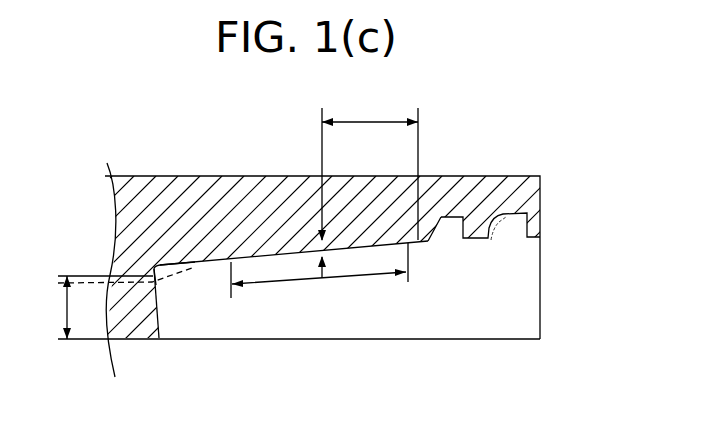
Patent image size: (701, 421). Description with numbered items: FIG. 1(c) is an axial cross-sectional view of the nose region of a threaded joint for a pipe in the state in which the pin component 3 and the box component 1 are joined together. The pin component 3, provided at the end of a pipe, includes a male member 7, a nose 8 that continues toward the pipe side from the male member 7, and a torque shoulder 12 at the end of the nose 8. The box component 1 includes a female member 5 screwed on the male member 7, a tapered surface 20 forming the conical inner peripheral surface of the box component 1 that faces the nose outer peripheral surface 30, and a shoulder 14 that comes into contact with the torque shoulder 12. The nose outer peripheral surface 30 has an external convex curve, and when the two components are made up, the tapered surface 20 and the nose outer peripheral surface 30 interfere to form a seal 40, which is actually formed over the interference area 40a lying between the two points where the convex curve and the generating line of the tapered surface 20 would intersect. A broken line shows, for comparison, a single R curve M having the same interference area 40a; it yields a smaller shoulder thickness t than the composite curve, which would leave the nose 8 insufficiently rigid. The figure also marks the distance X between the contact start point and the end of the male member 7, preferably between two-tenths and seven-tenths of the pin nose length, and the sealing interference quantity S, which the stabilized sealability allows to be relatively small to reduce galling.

The box component 1 is at (303, 181).
The pin component 3 is at (446, 333).
The female member 5 is at (483, 217).
The male member 7 is at (463, 247).
The nose 8 is at (329, 333).
The torque shoulder 12 is at (160, 320).
The shoulder 14 is at (143, 280).
The tapered surface 20 is at (182, 263).
The nose outer peripheral surface 30 is at (173, 272).
The seal 40 is at (318, 242).
The interference area 40a is at (319, 278).
The single R curve M is at (197, 271).
The sealing interference quantity S is at (332, 265).
The distance between the contact start point and the end of the male member X is at (368, 165).
The shoulder thickness t is at (98, 307).